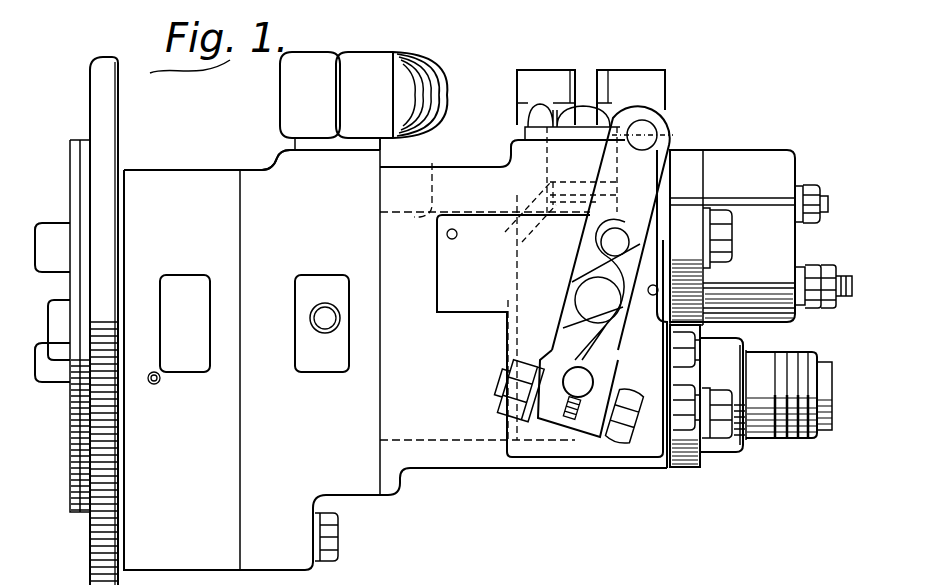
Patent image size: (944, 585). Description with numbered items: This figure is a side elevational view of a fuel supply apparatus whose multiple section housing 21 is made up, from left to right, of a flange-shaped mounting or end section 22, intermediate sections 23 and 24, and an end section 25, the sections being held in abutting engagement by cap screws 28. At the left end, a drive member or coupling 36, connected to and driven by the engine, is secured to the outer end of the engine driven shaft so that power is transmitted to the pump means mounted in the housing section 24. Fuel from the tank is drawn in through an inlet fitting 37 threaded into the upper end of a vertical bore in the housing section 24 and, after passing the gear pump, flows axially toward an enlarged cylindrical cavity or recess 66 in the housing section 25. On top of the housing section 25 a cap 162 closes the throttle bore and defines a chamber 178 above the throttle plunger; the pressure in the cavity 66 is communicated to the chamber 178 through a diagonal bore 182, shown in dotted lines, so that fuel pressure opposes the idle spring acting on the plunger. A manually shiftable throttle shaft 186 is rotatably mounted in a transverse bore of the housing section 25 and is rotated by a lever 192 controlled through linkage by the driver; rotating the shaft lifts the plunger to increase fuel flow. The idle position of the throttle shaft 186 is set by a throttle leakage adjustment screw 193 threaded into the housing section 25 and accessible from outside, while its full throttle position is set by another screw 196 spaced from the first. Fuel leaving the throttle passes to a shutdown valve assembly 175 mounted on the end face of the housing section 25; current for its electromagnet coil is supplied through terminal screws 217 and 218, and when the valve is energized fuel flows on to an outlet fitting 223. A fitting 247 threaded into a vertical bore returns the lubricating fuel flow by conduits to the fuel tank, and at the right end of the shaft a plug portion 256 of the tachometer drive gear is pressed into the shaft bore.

The multiple section housing 21 is at (476, 476).
The mounting or end section 22 is at (90, 80).
The intermediate section 23 is at (187, 178).
The intermediate section 24 is at (277, 160).
The end section 25 is at (470, 180).
The cap screws 28 is at (722, 215).
The drive member or coupling 36 is at (46, 222).
The inlet fitting 37 is at (395, 52).
The cylindrical cavity or recess 66 is at (485, 289).
The cap 162 is at (518, 125).
The shutdown valve assembly 175 is at (786, 158).
The chamber 178 is at (558, 166).
The diagonal bore 182 is at (537, 198).
The throttle shaft 186 is at (592, 382).
The lever 192 is at (668, 140).
The throttle leakage adjustment screw 193 is at (705, 352).
The screw 196 is at (694, 430).
The terminal screw 217 is at (827, 192).
The terminal screw 218 is at (838, 270).
The outlet fitting 223 is at (633, 72).
The fitting 247 is at (547, 72).
The plug portion 256 is at (772, 440).